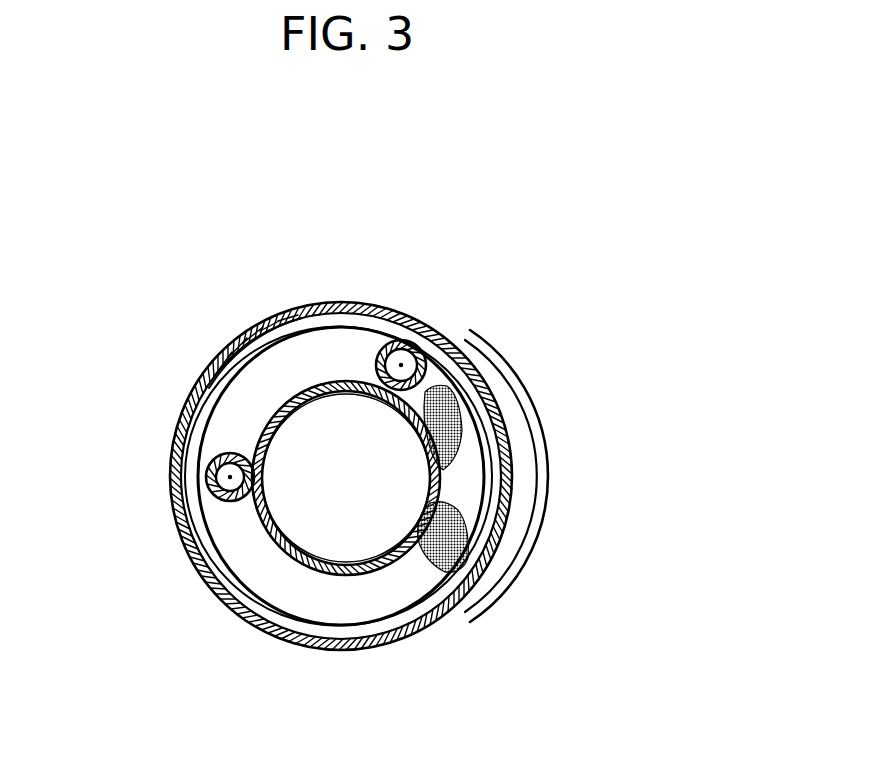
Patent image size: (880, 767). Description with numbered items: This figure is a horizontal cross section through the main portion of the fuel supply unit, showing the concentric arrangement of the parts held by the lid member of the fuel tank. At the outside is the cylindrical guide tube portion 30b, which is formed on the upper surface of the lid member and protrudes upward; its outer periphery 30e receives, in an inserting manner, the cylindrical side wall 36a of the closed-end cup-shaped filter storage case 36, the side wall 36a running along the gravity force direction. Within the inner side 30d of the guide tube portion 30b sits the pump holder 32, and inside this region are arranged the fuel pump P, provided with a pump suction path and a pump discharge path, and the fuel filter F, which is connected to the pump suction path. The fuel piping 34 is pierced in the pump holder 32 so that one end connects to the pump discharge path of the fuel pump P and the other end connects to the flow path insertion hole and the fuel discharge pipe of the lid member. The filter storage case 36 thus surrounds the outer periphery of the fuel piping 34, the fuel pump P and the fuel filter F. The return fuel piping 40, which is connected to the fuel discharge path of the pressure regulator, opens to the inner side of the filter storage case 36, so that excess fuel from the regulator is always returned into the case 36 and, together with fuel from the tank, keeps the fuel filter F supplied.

The guide tube portion 30b is at (220, 373).
The inner side of the guide tube 30d is at (300, 355).
The outer periphery of the guide tube portion 30e is at (243, 337).
The pump holder 32 is at (277, 558).
The fuel piping 34 is at (228, 476).
The filter storage case 36 is at (515, 460).
The cylindrical side wall 36a is at (616, 476).
The return fuel piping 40 is at (400, 363).
The fuel filter F is at (463, 505).
The fuel pump P is at (346, 478).